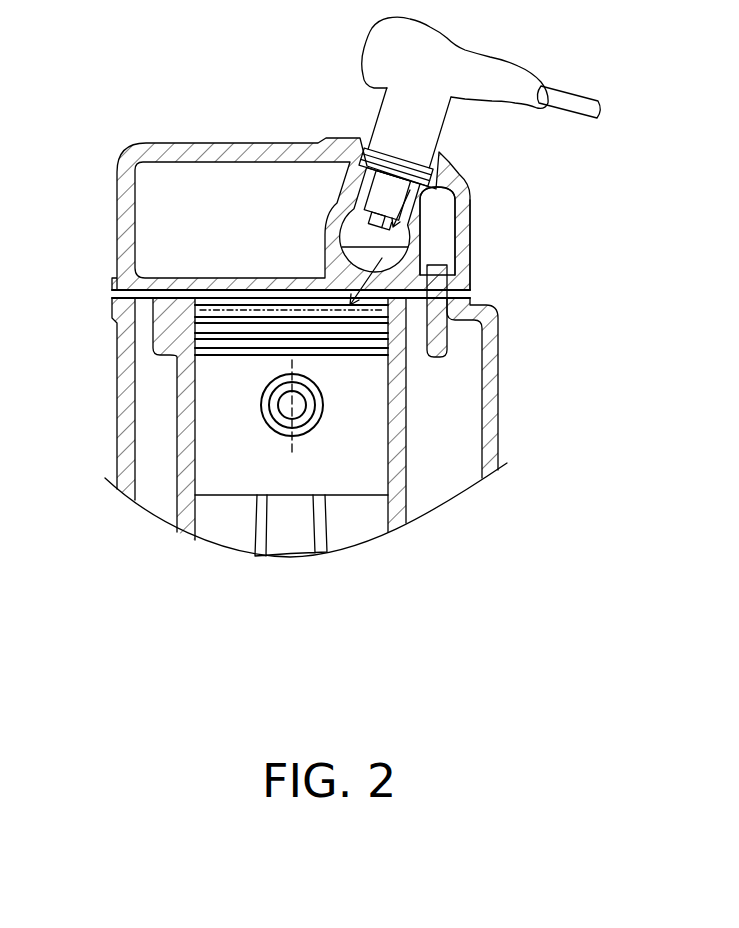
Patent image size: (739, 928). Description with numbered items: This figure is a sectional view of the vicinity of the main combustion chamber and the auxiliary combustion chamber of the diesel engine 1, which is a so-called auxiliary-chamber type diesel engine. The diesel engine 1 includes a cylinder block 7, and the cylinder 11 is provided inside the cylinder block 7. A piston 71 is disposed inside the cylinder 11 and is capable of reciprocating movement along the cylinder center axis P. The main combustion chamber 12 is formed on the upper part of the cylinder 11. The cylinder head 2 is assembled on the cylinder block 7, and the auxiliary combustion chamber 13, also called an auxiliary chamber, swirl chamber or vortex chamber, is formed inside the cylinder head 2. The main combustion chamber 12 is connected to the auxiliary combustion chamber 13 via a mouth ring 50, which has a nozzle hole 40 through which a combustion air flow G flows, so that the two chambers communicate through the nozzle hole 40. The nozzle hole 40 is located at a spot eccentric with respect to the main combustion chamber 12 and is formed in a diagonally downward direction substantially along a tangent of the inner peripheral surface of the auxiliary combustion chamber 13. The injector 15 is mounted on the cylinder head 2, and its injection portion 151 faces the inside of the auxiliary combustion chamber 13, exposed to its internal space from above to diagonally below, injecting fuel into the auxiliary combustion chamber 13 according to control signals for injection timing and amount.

The diesel engine 1 is at (213, 102).
The cylinder head 2 is at (117, 181).
The cylinder block 7 is at (500, 391).
The cylinder 11 is at (177, 442).
The main combustion chamber 12 is at (260, 297).
The auxiliary combustion chamber 13 is at (425, 198).
The injector 15 is at (352, 190).
The injection portion 151 is at (345, 205).
The nozzle hole 40 is at (420, 248).
The mouth ring 50 is at (432, 268).
The piston 71 is at (340, 470).
The combustion air flow G is at (342, 227).
The cylinder center axis P is at (292, 455).